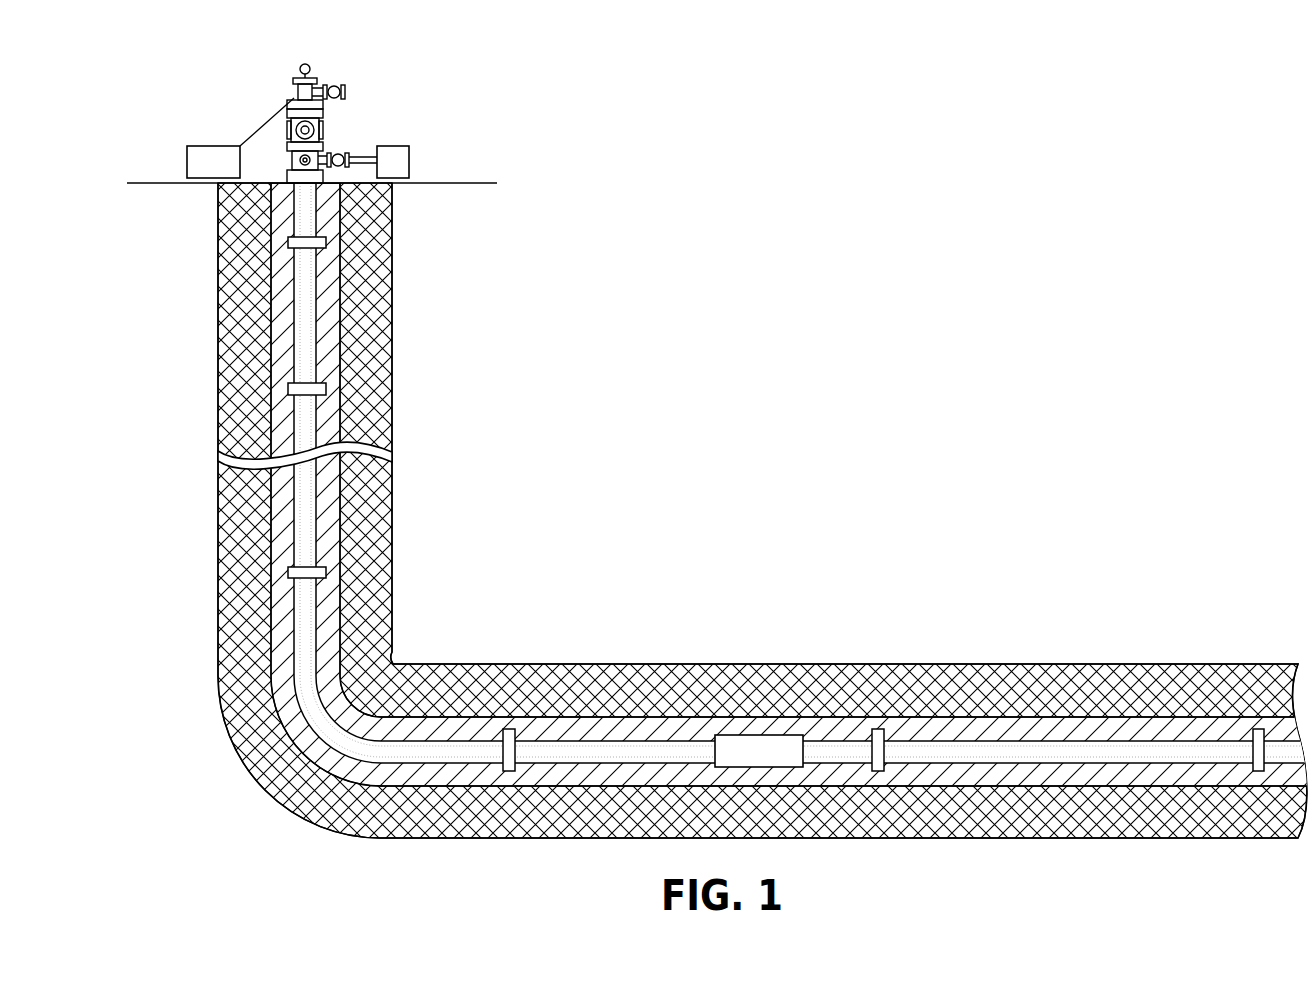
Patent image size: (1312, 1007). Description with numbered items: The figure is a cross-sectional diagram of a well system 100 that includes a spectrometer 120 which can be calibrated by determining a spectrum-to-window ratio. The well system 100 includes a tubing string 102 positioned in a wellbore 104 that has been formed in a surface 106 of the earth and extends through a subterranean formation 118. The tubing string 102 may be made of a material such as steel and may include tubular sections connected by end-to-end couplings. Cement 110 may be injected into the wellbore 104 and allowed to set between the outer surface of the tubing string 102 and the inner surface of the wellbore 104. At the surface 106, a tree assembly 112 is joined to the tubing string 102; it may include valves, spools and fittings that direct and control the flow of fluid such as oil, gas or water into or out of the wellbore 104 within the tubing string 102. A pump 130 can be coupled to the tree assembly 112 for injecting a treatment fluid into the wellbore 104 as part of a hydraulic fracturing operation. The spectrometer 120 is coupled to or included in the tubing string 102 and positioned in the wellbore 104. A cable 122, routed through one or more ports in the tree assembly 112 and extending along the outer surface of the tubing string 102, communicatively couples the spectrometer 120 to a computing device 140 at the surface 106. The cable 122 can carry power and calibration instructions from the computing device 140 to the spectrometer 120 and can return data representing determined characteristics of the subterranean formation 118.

The well system 100 is at (578, 124).
The tubing string 102 is at (293, 270).
The wellbore 104 is at (281, 200).
The surface 106 is at (490, 183).
The cement 110 is at (328, 422).
The tree assembly 112 is at (325, 130).
The subterranean formation 118 is at (1038, 664).
The spectrometer 120 is at (752, 735).
The cable 122 is at (310, 335).
The pump 130 is at (411, 157).
The computing device 140 is at (213, 144).